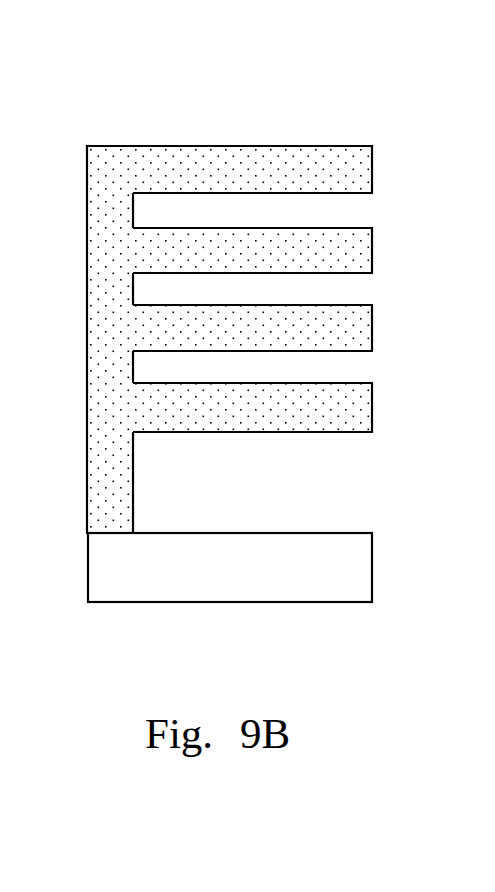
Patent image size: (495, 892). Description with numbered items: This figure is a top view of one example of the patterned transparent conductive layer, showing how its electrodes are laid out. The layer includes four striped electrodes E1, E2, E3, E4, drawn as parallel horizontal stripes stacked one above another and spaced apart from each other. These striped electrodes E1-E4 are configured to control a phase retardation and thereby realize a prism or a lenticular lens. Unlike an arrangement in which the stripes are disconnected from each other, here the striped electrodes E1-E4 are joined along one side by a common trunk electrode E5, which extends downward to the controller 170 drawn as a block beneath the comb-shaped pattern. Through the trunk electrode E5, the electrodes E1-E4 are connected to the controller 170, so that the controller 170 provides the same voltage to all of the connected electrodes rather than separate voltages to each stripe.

The electrode E1 is at (363, 173).
The electrode E2 is at (363, 249).
The electrode E3 is at (363, 331).
The electrode E4 is at (363, 413).
The trunk electrode E5 is at (125, 491).
The controller 170 is at (254, 582).